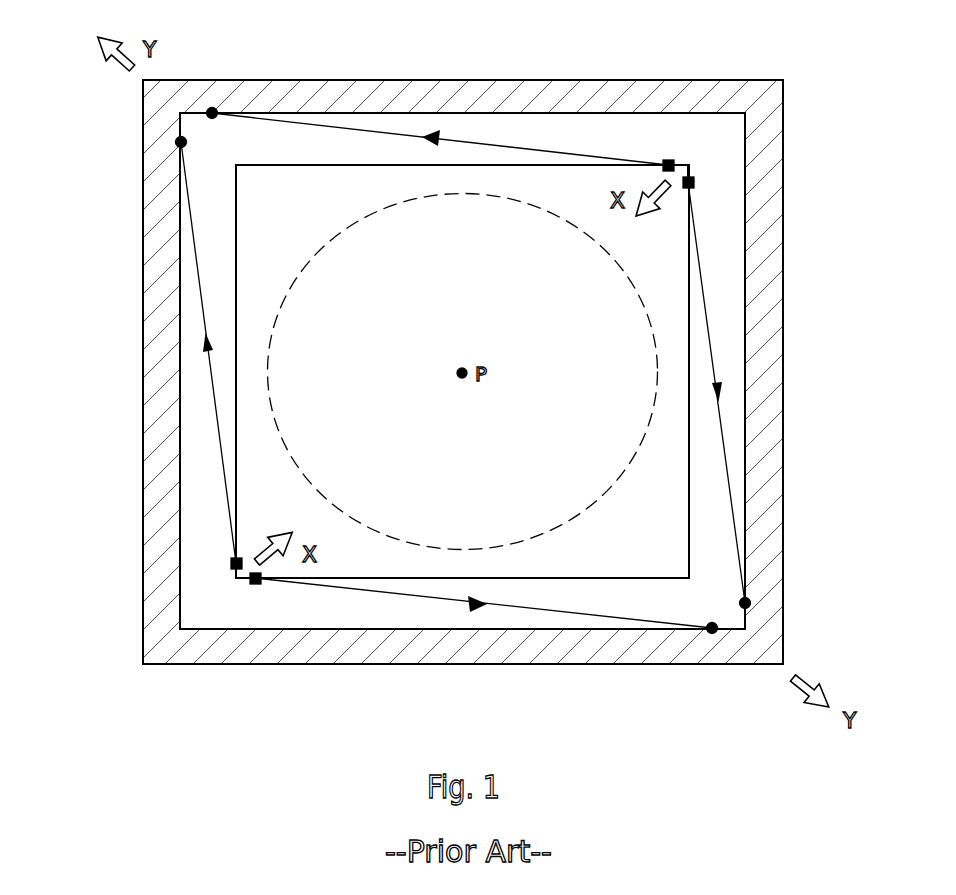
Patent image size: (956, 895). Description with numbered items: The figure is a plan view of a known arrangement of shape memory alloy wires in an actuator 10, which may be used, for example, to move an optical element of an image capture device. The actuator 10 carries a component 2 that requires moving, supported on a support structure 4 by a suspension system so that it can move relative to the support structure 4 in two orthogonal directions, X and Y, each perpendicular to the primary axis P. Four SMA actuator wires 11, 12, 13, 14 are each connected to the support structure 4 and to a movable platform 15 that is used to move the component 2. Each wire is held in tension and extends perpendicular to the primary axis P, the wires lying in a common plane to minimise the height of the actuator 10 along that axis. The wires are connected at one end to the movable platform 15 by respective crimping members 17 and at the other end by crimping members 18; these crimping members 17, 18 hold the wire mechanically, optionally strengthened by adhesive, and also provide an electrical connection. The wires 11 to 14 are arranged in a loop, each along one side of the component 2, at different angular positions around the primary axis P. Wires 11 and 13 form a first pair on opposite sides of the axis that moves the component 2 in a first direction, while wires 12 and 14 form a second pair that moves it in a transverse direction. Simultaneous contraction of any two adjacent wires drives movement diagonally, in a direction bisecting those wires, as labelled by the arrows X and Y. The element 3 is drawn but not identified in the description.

The component 2 is at (658, 356).
The table 3 is at (580, 184).
The support structure 4 is at (765, 252).
The actuator 10 is at (103, 341).
The SMA actuator wire 11 is at (525, 148).
The SMA actuator wire 12 is at (724, 437).
The SMA actuator wire 13 is at (540, 612).
The SMA actuator wire 14 is at (218, 425).
The movable platform 15 is at (665, 299).
The crimping member 17 is at (668, 162).
The crimping member 18 is at (212, 110).